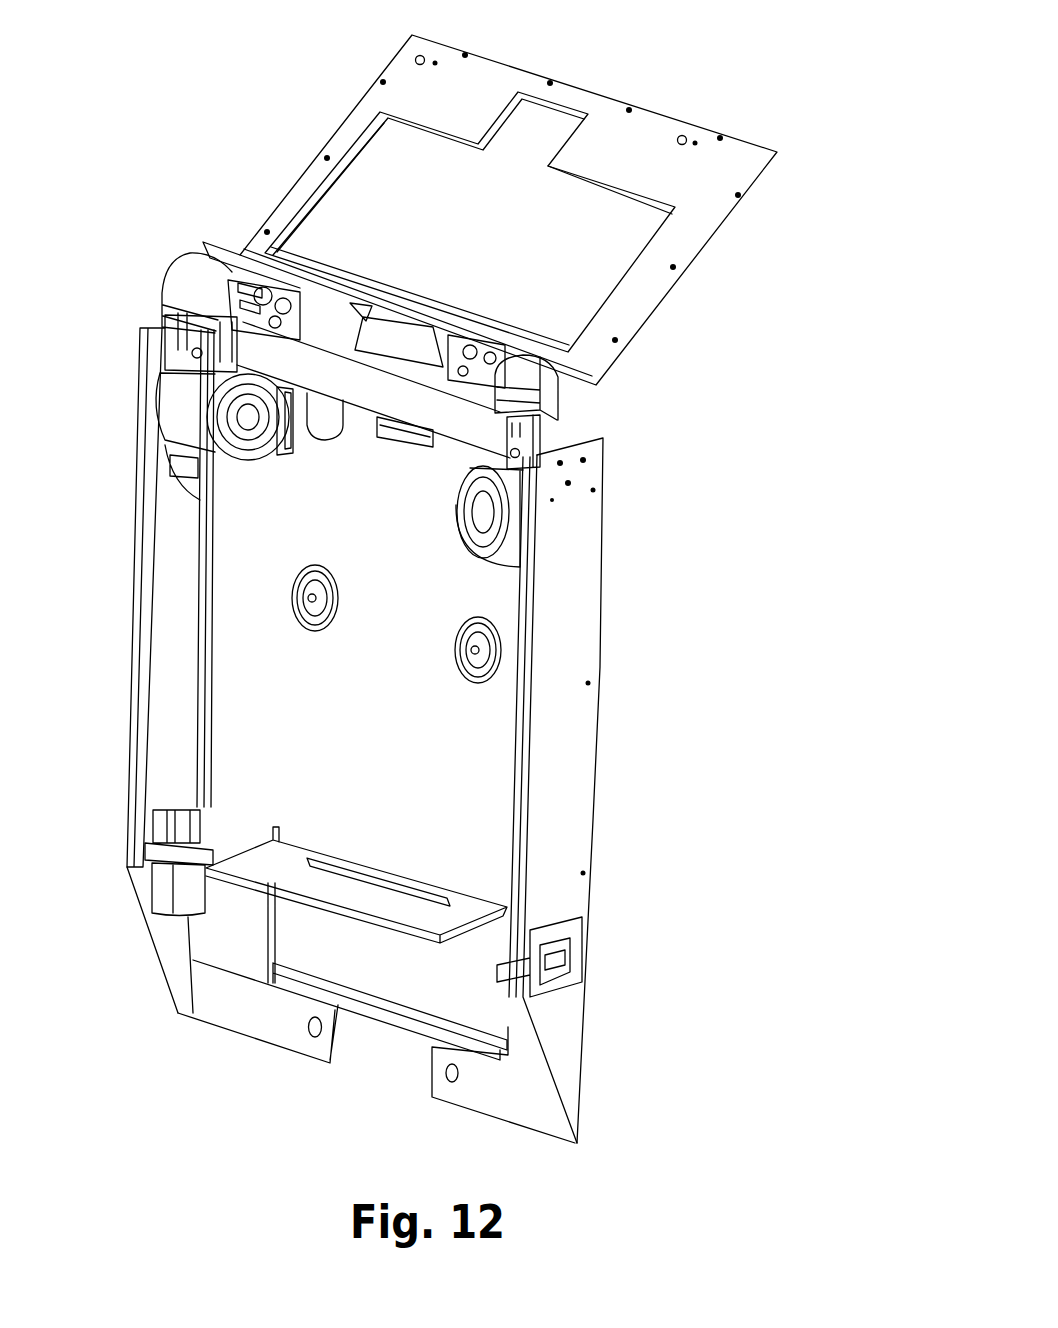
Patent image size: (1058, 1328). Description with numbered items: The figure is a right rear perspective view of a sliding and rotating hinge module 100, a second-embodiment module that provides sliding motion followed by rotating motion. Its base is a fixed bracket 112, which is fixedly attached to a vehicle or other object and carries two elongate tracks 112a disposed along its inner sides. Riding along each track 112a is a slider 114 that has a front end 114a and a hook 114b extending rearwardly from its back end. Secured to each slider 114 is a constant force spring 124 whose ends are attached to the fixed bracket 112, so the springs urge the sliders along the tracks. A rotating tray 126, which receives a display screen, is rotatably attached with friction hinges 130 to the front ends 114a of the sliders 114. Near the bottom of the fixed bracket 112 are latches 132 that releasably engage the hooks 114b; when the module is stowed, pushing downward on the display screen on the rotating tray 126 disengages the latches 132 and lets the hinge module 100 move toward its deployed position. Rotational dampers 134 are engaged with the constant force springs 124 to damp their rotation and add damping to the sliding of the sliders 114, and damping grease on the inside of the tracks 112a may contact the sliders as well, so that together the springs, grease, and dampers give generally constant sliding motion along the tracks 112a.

The sliding and rotating hinge module 100 is at (824, 76).
The fixed bracket 112 is at (260, 1017).
The elongate tracks 112a is at (165, 620).
The slider 114 is at (163, 320).
The front end 114a is at (187, 267).
The hook 114b is at (183, 492).
The constant force spring 124 is at (193, 410).
The rotating tray 126 is at (655, 120).
The friction hinges 130 is at (240, 285).
The latches 132 is at (167, 895).
The rotational dampers 134 is at (262, 428).